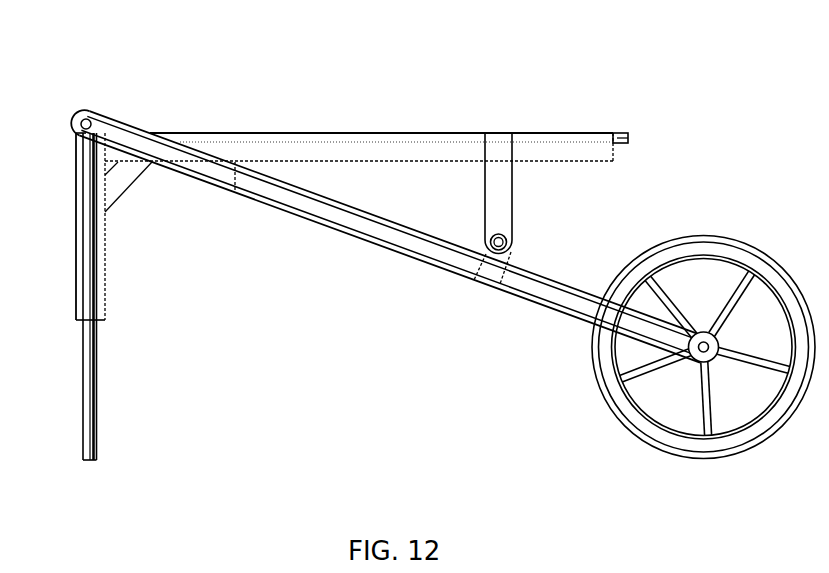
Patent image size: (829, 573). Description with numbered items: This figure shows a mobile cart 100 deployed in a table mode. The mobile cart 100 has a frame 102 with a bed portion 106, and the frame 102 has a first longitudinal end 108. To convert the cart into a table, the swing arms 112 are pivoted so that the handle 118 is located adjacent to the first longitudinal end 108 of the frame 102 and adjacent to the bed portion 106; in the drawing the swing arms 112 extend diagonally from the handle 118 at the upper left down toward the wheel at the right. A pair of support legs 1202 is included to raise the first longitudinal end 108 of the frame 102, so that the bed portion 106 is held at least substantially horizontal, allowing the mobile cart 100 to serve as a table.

The mobile cart 100 is at (171, 72).
The frame 102 is at (350, 133).
The bed portion 106 is at (220, 133).
The first longitudinal end 108 is at (75, 218).
The swing arms 112 is at (360, 237).
The handle 118 is at (85, 118).
The support legs 1202 is at (93, 390).